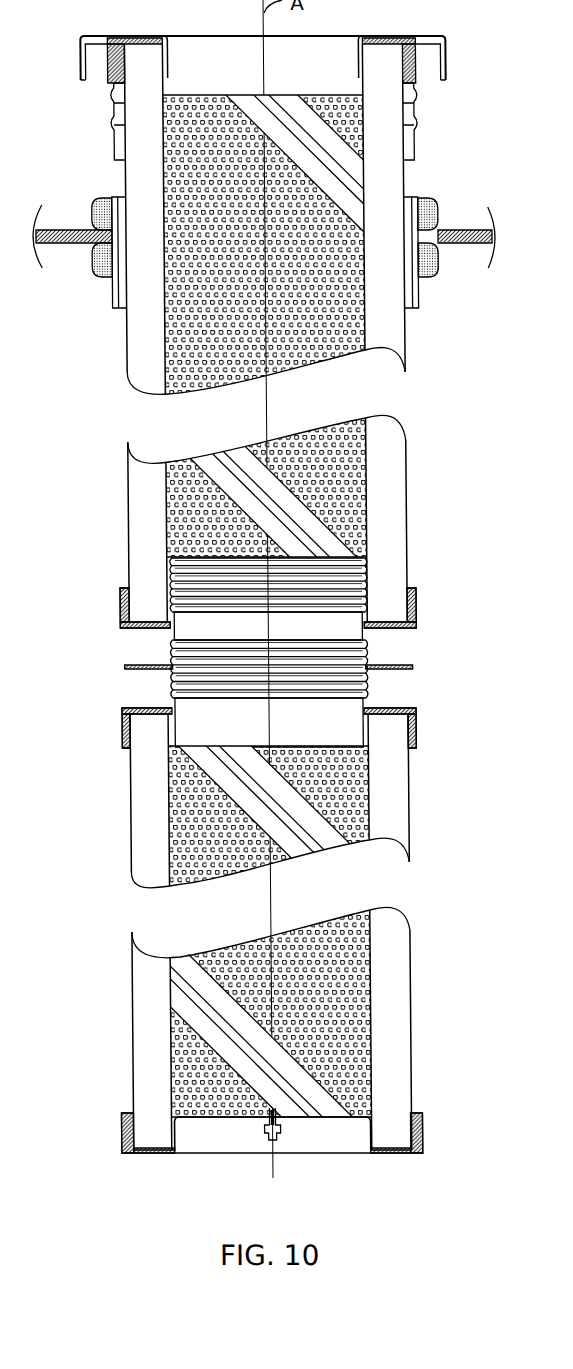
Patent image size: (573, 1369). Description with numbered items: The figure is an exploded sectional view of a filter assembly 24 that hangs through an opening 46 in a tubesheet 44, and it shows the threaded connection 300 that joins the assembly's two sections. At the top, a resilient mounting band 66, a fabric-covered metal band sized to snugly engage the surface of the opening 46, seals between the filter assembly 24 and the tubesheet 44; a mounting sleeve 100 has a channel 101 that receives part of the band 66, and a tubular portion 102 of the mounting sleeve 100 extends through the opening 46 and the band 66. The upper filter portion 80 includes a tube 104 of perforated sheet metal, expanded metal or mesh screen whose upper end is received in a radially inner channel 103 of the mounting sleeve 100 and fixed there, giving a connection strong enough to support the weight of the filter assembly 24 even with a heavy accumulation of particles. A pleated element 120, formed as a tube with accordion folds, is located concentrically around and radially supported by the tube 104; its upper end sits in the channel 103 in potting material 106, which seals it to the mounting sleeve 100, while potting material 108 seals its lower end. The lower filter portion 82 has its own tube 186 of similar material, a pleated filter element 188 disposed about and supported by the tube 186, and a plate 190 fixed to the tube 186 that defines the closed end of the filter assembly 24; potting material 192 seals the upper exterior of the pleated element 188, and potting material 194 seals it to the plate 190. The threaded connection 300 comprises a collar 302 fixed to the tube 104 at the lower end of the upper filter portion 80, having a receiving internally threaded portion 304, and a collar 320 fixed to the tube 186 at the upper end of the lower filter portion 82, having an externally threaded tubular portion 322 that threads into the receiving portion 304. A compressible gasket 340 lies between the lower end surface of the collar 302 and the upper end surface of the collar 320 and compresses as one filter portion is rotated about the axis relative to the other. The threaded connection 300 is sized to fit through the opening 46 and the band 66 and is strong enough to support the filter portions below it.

The filter assembly 24 is at (406, 477).
The tubesheet 44 is at (440, 237).
The opening 46 is at (420, 262).
The resilient mounting band 66 is at (417, 198).
The upper filter portion 80 is at (408, 357).
The lower filter portion 82 is at (410, 827).
The mounting sleeve 100 is at (428, 36).
The channel 101 is at (441, 60).
The tubular portion 102 is at (416, 127).
The radially inner channel 103 is at (148, 43).
The tube 104 is at (176, 459).
The potting material 106 is at (120, 40).
The potting material 108 is at (119, 587).
The pleated element 120 is at (148, 345).
The tube 186 is at (199, 880).
The pleated filter element 188 is at (145, 846).
The plate 190 is at (116, 1153).
The potting material 192 is at (402, 748).
The potting material 194 is at (409, 1113).
The threaded connection 300 is at (259, 653).
The collar 302 is at (115, 610).
The internally threaded portion 304 is at (177, 568).
The collar 320 is at (116, 740).
The externally threaded tubular portion 322 is at (167, 675).
The compressible gasket 340 is at (118, 667).